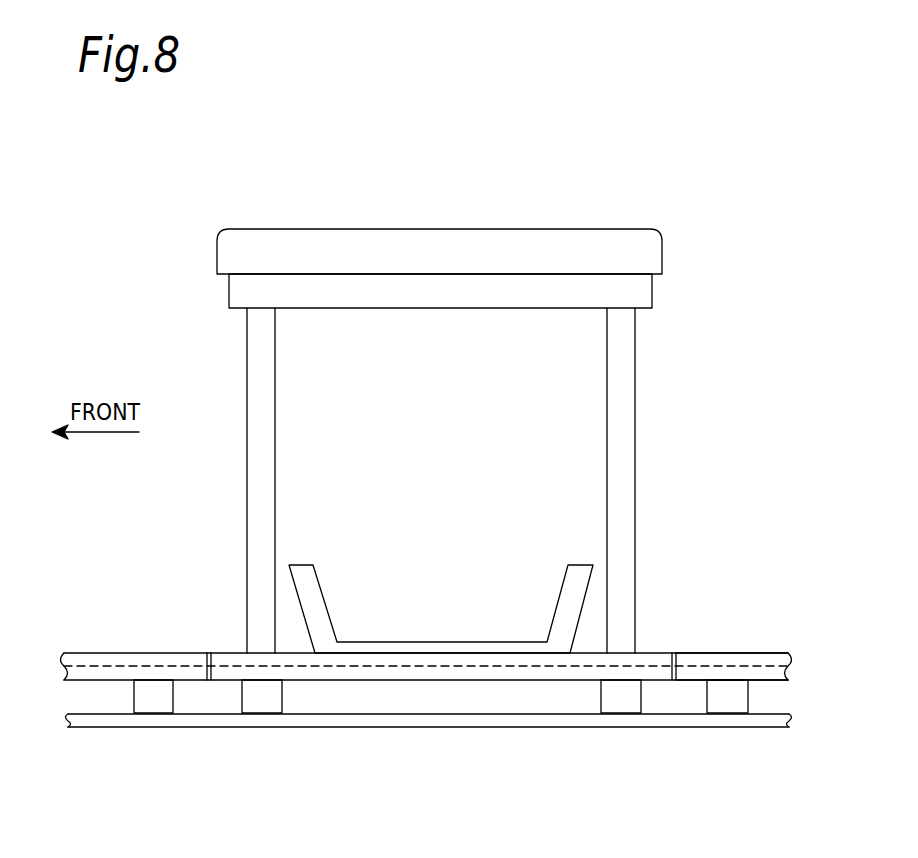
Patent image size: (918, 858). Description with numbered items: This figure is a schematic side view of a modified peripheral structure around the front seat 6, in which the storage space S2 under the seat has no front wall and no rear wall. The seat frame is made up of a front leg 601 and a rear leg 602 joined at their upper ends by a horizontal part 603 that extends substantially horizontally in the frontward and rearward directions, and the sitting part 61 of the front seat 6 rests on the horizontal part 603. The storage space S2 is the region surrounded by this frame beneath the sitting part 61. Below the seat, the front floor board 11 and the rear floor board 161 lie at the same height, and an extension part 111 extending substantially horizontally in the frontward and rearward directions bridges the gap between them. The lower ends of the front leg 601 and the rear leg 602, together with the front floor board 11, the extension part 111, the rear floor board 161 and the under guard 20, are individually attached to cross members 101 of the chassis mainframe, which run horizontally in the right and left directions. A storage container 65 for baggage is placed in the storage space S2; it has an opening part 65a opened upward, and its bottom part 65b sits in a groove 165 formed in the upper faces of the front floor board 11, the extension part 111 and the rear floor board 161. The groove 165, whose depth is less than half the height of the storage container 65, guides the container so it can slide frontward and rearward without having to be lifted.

The front seat 6 is at (224, 223).
The sitting part 61 is at (471, 236).
The front leg 601 is at (262, 344).
The rear leg 602 is at (616, 350).
The horizontal part 603 is at (527, 290).
The storage space S2 is at (391, 325).
The storage container 65 is at (578, 565).
The opening part 65a is at (495, 572).
The bottom part 65b is at (375, 665).
The front floor board 11 is at (118, 660).
The rear floor board 161 is at (760, 660).
The groove 165 is at (317, 663).
The extension part 111 is at (452, 675).
The cross member 101 is at (153, 700).
The under guard 20 is at (96, 724).